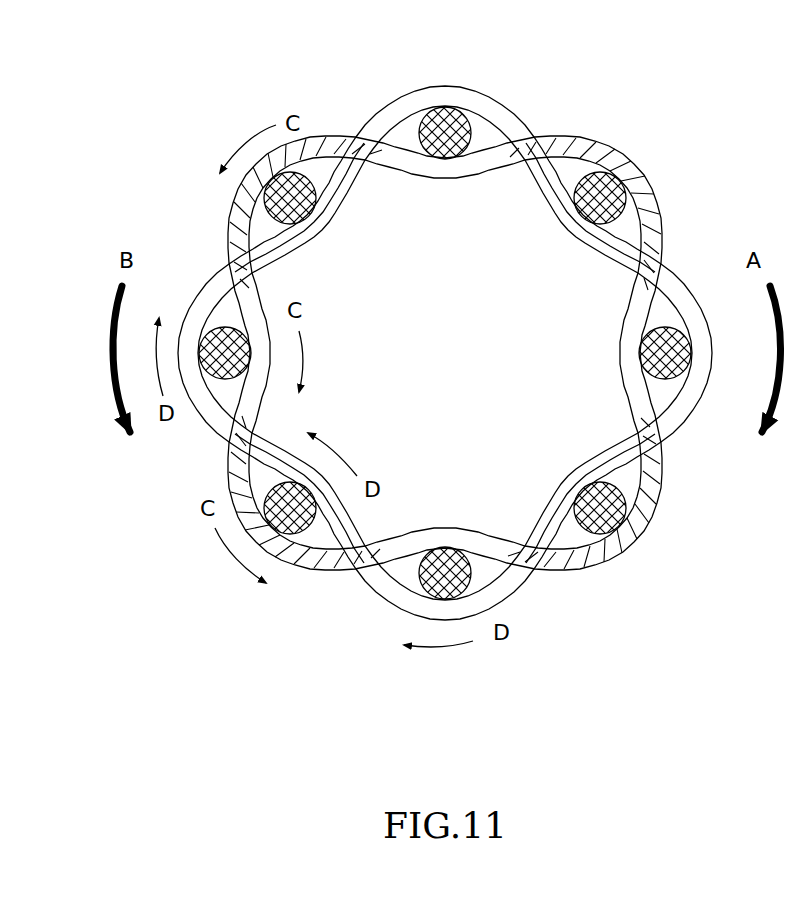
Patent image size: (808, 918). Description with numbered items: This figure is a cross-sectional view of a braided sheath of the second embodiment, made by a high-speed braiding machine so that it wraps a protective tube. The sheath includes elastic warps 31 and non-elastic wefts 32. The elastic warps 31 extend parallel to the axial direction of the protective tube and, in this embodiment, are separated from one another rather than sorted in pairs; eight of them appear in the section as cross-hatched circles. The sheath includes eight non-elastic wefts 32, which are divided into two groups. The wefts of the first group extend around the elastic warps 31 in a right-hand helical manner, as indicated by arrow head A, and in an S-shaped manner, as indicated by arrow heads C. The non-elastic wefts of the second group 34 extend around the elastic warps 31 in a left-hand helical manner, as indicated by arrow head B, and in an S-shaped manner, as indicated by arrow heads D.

The elastic warp 31 is at (446, 122).
The non-elastic weft 32 is at (386, 108).
The second group of non-elastic wefts 34 is at (555, 136).